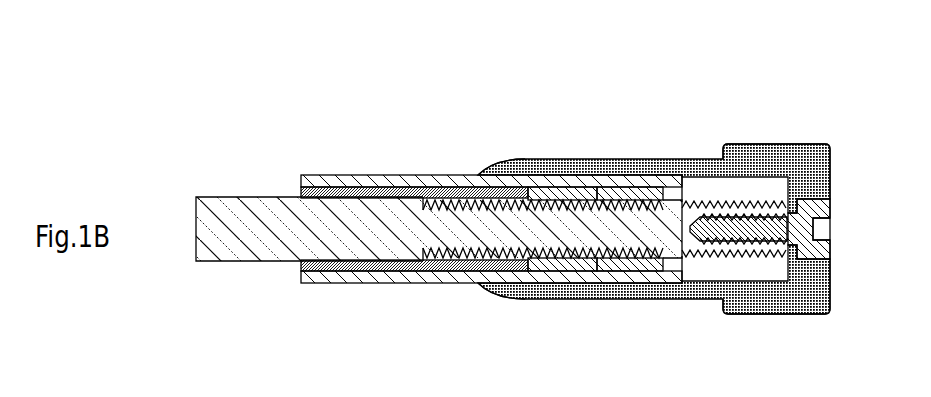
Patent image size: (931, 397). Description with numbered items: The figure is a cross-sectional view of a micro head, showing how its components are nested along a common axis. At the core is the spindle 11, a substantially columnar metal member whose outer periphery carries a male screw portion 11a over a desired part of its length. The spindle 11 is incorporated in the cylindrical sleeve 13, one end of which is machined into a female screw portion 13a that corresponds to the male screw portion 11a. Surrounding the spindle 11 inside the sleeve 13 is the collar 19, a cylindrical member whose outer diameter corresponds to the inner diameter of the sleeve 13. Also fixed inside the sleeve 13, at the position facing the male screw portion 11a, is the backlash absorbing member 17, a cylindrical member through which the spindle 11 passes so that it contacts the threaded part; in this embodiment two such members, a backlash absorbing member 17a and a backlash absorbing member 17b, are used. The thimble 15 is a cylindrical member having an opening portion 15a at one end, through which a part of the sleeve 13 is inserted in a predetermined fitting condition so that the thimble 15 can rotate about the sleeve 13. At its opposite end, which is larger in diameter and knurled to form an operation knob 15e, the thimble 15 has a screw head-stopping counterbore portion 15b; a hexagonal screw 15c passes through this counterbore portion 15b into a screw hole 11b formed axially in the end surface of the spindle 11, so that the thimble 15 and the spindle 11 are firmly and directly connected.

The spindle 11 is at (362, 232).
The male screw portion 11a is at (498, 254).
The screw hole 11b is at (693, 246).
The sleeve 13 is at (443, 181).
The female screw portion 13a is at (682, 180).
The thimble 15 is at (604, 297).
The opening portion 15a is at (481, 288).
The counterbore portion 15b is at (815, 198).
The hexagonal screw 15c is at (832, 220).
The operation knob 15e is at (727, 333).
The backlash absorbing member 17 is at (595, 141).
The backlash absorbing member 17a is at (568, 196).
The backlash absorbing member 17b is at (636, 196).
The collar 19 is at (390, 196).